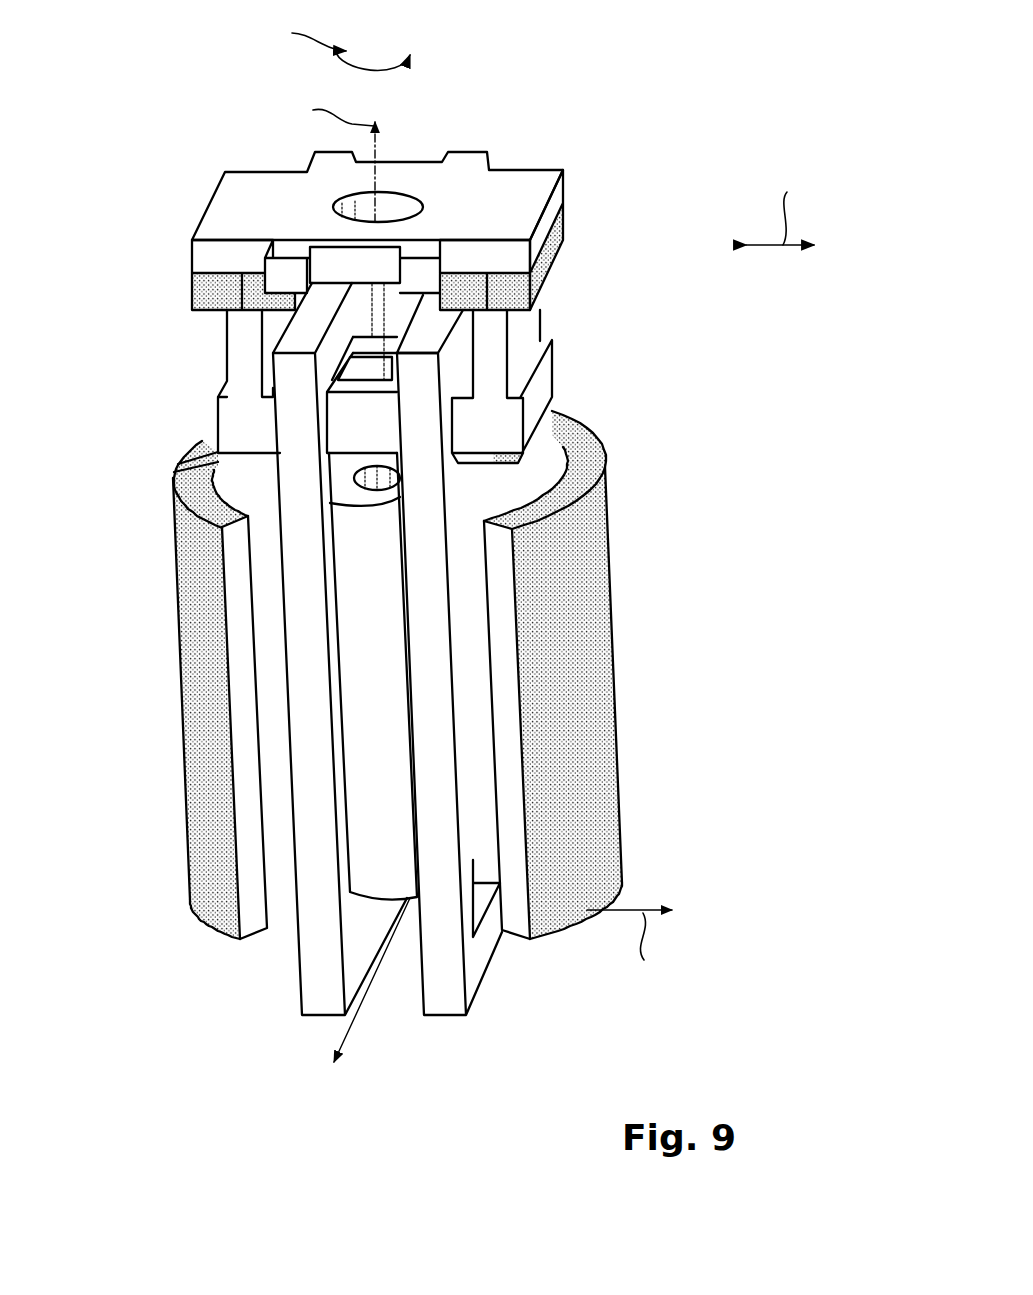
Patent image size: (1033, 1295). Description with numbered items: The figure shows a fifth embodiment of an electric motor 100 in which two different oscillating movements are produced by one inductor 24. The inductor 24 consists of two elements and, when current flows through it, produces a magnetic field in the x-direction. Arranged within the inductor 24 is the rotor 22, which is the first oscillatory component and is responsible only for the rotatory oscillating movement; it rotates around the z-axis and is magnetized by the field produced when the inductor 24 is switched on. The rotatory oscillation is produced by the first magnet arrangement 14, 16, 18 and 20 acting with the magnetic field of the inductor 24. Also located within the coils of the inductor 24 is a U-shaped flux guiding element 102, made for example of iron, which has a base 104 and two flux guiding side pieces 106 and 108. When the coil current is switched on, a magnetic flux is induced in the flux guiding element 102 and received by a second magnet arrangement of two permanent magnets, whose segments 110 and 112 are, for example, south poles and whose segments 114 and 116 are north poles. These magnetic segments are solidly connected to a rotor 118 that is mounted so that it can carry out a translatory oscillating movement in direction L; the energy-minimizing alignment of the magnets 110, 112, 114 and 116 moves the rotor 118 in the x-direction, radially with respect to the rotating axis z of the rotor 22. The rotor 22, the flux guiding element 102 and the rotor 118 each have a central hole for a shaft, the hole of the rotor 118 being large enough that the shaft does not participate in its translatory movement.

The motor 100 is at (672, 200).
The magnetic segment 110 is at (532, 258).
The rotor 118 is at (457, 192).
The magnetic segment 116 is at (438, 353).
The magnetic segment 114 is at (258, 282).
The magnetic segment 112 is at (200, 291).
The flux guiding element 102 is at (218, 342).
The flux guiding side piece 106 is at (242, 367).
The flux guiding side piece 108 is at (493, 330).
The base 104 is at (493, 420).
The first magnet arrangement element 14 is at (198, 453).
The first magnet arrangement element 16 is at (212, 790).
The first magnet arrangement element 18 is at (577, 437).
The first magnet arrangement element 20 is at (585, 737).
The rotor 22 is at (528, 484).
The inductor 24 is at (318, 963).